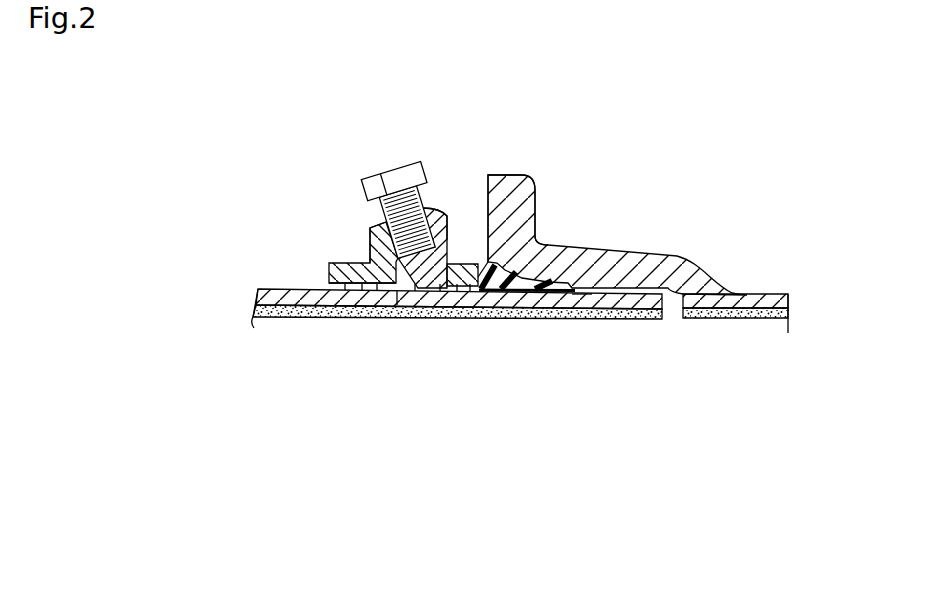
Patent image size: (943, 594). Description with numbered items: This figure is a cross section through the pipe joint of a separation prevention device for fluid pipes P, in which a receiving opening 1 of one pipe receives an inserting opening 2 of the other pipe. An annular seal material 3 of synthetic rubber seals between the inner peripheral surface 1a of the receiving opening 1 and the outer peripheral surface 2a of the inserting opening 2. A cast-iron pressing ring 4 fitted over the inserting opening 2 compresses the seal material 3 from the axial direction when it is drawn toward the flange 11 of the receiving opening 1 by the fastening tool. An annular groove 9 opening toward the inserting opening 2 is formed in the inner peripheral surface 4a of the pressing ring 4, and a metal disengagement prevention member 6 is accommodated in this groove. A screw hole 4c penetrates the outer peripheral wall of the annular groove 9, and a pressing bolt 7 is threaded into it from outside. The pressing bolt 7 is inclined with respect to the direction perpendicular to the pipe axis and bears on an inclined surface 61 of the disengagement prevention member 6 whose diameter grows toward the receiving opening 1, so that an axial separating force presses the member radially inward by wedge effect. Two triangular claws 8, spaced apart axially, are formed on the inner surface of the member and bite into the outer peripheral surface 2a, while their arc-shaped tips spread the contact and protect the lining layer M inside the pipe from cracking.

The receiving opening 1 is at (618, 254).
The inner peripheral surface of the receiving opening 1a is at (549, 246).
The flange of the receiving opening 11 is at (517, 176).
The inserting opening 2 is at (283, 296).
The outer peripheral surface of the inserting opening 2a is at (606, 285).
The seal material 3 is at (533, 289).
The pressing ring 4 is at (370, 228).
The inner peripheral surface of the pressing ring 4a is at (377, 284).
The screw hole 4c is at (425, 210).
The disengagement prevention member 6 is at (370, 243).
The inclined surface 61 is at (466, 203).
The pressing bolt 7 is at (395, 169).
The claws 8 is at (445, 291).
The annular groove 9 is at (397, 297).
The fluid pipe P is at (262, 289).
The lining layer M is at (582, 306).